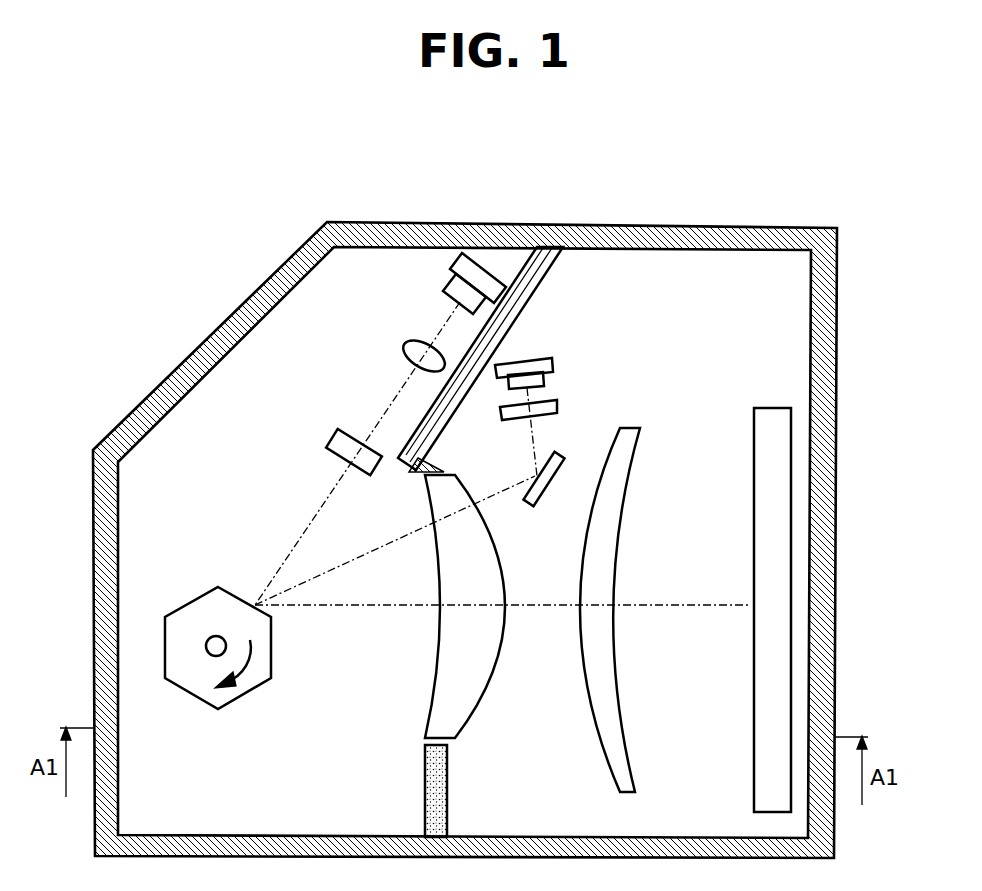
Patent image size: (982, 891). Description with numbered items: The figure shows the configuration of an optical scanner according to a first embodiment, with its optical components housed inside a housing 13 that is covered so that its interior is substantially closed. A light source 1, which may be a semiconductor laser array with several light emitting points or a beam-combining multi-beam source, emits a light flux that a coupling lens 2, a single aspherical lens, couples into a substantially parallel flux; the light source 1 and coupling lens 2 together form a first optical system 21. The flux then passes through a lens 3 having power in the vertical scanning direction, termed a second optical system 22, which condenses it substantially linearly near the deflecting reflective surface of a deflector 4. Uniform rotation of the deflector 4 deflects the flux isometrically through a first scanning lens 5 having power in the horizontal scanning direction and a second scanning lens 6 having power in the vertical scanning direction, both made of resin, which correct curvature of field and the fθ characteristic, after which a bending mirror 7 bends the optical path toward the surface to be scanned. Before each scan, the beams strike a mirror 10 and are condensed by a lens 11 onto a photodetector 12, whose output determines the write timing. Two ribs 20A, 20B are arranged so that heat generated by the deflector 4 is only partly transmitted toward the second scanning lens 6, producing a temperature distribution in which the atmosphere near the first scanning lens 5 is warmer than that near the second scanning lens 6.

The light source 1 is at (453, 262).
The coupling lens 2 is at (412, 345).
The lens 3 is at (343, 440).
The deflector 4 is at (191, 602).
The first scanning lens 5 is at (440, 662).
The second scanning lens 6 is at (590, 665).
The bending mirror 7 is at (760, 673).
The mirror 10 is at (546, 501).
The lens 11 is at (558, 408).
The photodetector 12 is at (555, 365).
The housing 13 is at (787, 228).
The rib 20A is at (449, 782).
The rib 20B is at (538, 288).
The first optical system 21 is at (394, 254).
The second optical system 22 is at (302, 383).